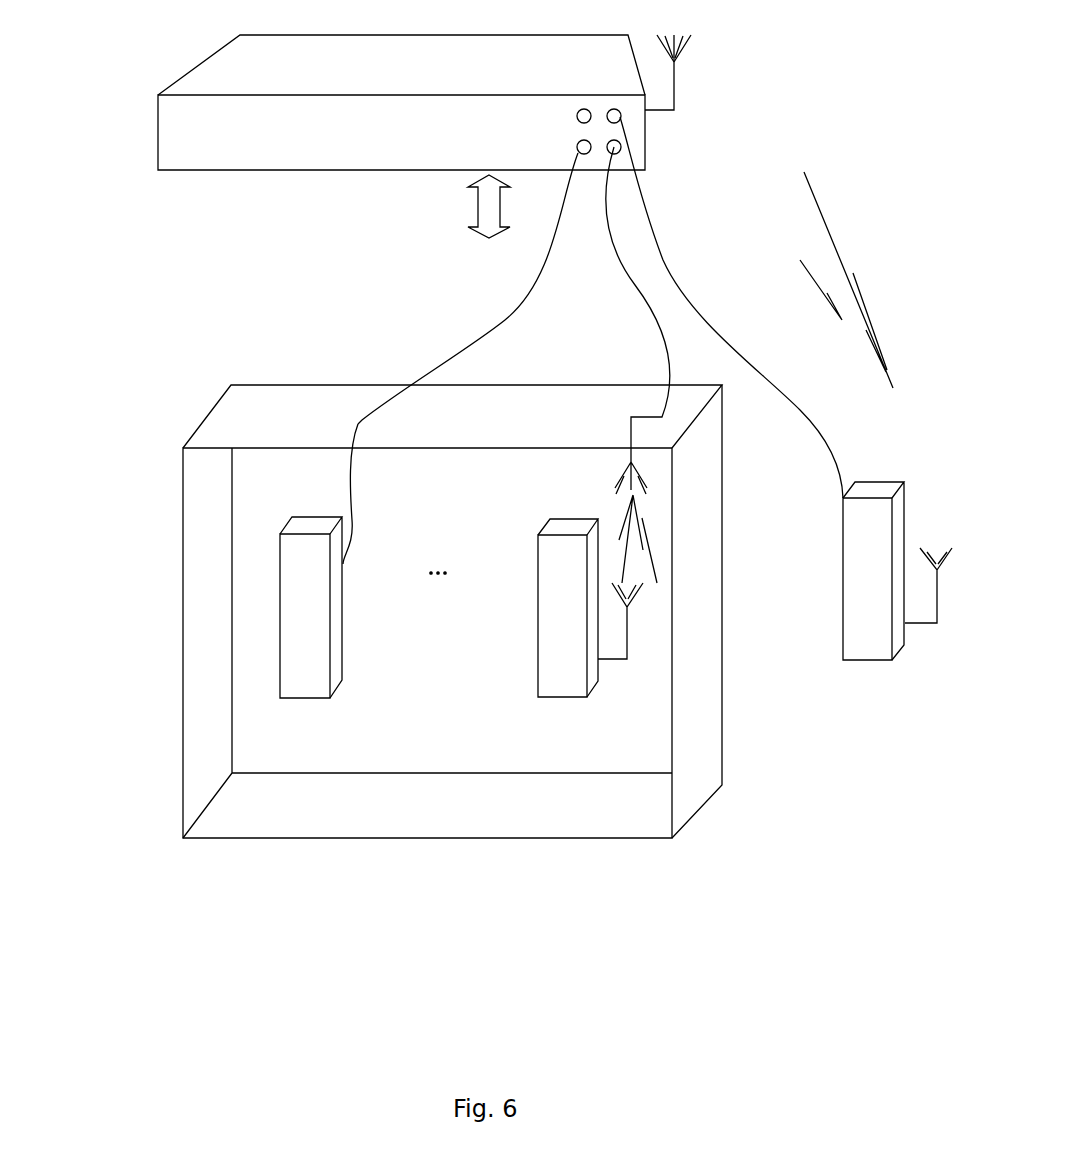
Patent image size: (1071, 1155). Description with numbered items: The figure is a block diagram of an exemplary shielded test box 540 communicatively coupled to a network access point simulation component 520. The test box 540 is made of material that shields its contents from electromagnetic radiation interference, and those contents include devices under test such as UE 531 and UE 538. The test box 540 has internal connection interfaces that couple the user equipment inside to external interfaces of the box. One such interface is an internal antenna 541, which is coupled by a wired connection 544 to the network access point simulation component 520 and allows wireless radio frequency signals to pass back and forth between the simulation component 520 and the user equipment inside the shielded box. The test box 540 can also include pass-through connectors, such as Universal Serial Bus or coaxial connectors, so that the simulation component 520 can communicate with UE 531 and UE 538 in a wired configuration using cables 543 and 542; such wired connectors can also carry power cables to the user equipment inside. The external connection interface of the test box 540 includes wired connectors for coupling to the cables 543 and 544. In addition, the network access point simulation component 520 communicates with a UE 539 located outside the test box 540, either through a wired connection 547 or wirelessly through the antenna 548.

The network access point simulation component 520 is at (541, 79).
The antenna 548 is at (678, 116).
The cable 543 is at (428, 352).
The cable 542 is at (354, 473).
The wired connection 544 is at (656, 360).
The wired connection 547 is at (786, 399).
The test box 540 is at (255, 419).
The UE 531 is at (302, 600).
The UE 538 is at (572, 600).
The UE 539 is at (868, 671).
The internal antenna 541 is at (630, 455).